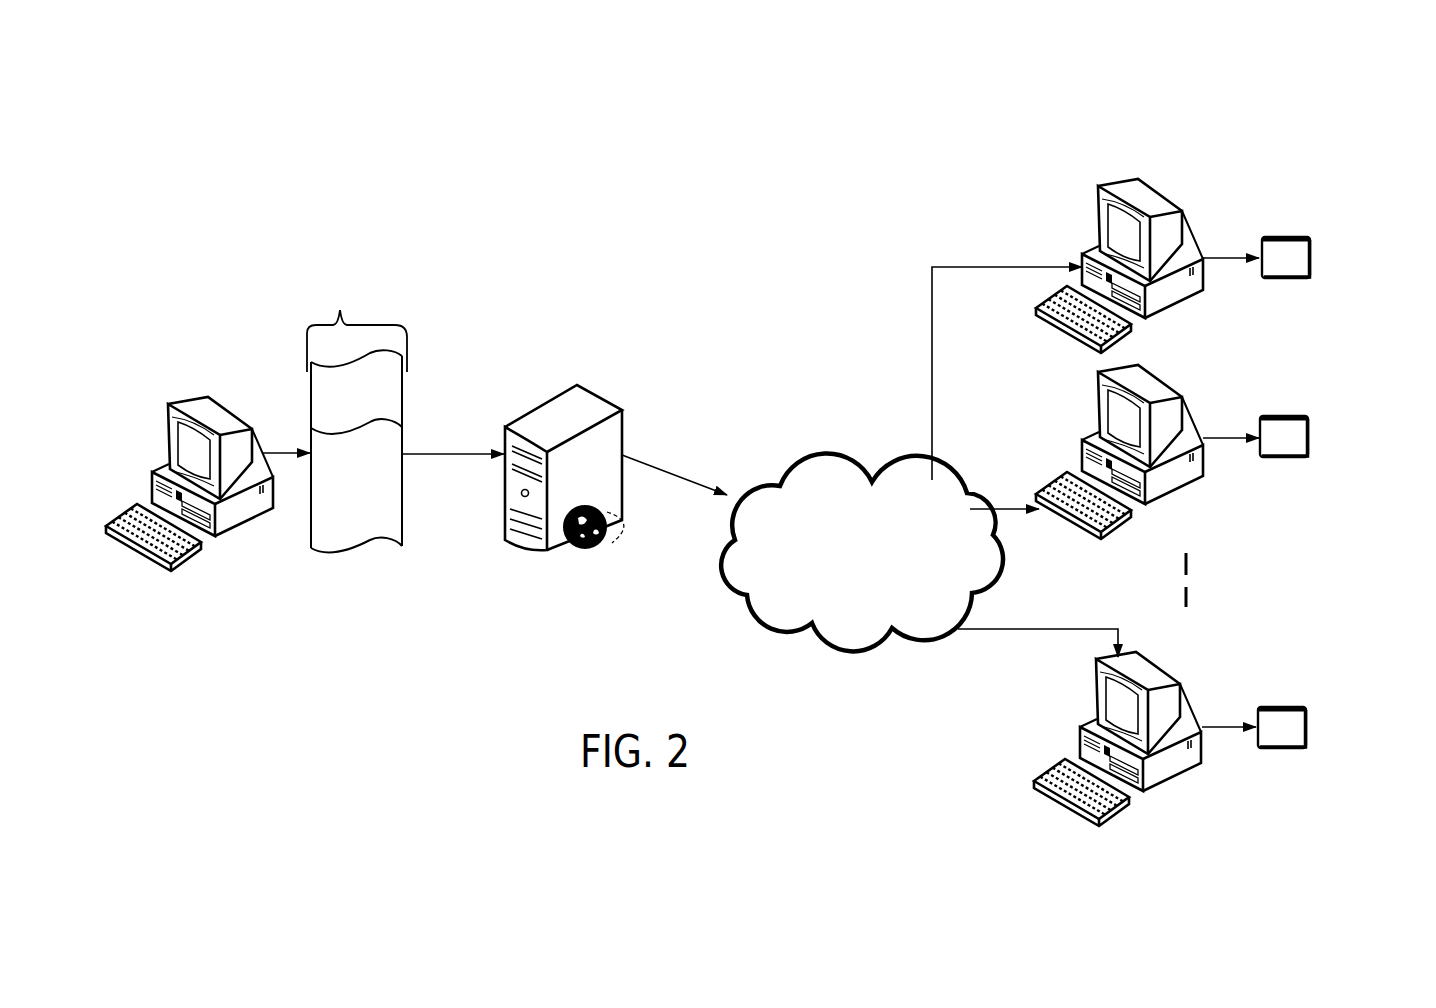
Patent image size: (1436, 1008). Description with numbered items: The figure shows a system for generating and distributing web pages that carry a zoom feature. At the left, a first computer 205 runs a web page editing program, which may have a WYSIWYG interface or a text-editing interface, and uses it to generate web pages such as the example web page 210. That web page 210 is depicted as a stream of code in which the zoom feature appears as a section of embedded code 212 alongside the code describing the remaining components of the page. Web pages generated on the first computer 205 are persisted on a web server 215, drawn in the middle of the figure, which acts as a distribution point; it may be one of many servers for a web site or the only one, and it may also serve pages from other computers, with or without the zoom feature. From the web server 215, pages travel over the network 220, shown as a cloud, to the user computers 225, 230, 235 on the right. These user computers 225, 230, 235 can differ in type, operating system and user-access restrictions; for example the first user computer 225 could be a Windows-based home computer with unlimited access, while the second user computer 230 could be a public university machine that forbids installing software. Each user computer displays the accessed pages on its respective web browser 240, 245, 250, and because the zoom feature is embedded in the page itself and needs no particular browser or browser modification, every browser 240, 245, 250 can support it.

The first computer 205 is at (204, 401).
The web page 210 is at (357, 381).
The embedded code 212 is at (309, 399).
The web server 215 is at (545, 397).
The network 220 is at (820, 457).
The first user computer 225 is at (1105, 183).
The second user computer 230 is at (1095, 393).
The user computer 235 is at (1097, 687).
The web browser 240 is at (1306, 230).
The web browser 245 is at (1297, 415).
The web browser 250 is at (1303, 704).